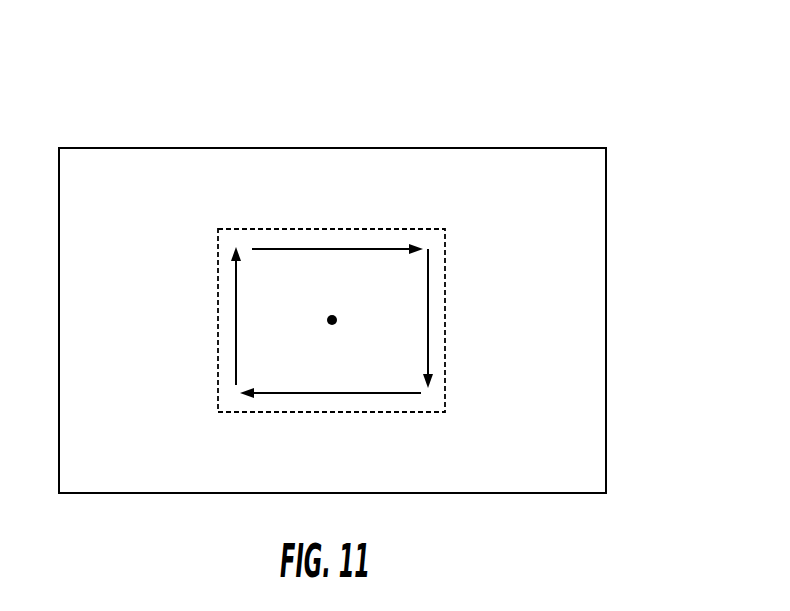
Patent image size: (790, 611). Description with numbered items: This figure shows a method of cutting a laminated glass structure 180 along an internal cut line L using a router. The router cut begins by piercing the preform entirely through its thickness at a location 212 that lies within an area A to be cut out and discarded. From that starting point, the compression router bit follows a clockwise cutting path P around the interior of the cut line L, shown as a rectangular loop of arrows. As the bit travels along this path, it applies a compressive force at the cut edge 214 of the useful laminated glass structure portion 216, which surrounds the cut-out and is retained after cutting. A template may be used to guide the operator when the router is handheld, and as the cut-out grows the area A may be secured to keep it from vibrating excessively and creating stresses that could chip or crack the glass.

The display screen 180 is at (628, 101).
The cut edge 214 is at (305, 229).
The clockwise cutting path P is at (364, 249).
The location 212 is at (332, 322).
The cut line L is at (445, 292).
The useful laminated glass structure portion 216 is at (552, 364).
The area A is at (162, 324).